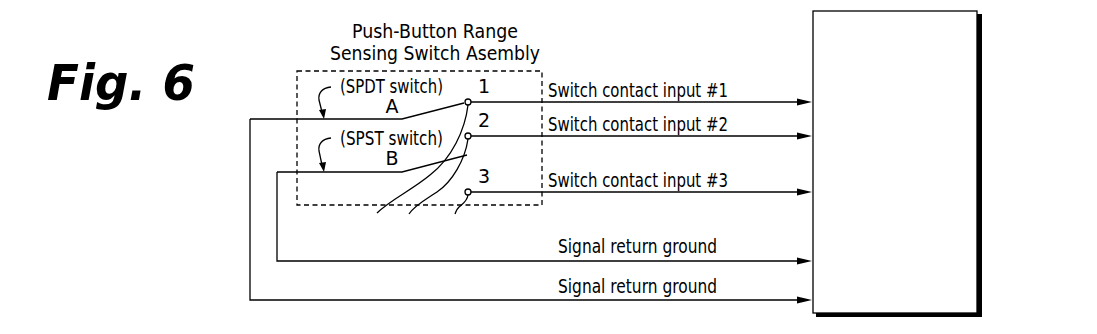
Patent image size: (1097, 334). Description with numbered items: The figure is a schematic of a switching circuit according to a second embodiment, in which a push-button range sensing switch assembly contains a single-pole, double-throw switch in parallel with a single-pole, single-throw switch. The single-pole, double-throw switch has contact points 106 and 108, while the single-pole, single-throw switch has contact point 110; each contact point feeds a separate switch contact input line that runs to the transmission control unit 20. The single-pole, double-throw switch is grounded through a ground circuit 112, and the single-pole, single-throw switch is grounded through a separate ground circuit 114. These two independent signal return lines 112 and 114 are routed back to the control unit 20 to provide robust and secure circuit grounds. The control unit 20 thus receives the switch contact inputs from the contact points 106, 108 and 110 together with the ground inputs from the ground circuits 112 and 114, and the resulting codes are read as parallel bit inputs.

The control unit 20 is at (980, 145).
The contact point 106 is at (408, 175).
The contact point 108 is at (430, 192).
The contact point 110 is at (453, 220).
The ground circuit 112 is at (448, 302).
The ground circuit 114 is at (440, 262).